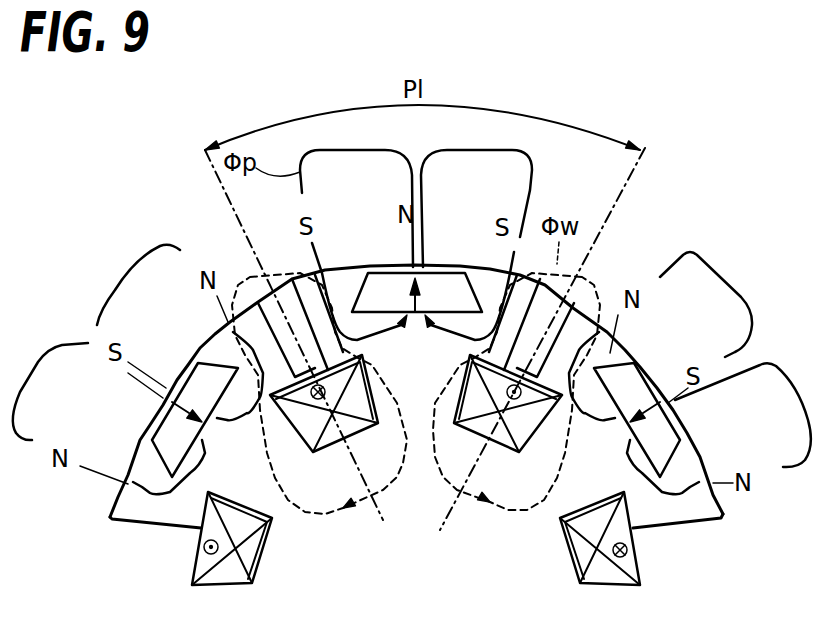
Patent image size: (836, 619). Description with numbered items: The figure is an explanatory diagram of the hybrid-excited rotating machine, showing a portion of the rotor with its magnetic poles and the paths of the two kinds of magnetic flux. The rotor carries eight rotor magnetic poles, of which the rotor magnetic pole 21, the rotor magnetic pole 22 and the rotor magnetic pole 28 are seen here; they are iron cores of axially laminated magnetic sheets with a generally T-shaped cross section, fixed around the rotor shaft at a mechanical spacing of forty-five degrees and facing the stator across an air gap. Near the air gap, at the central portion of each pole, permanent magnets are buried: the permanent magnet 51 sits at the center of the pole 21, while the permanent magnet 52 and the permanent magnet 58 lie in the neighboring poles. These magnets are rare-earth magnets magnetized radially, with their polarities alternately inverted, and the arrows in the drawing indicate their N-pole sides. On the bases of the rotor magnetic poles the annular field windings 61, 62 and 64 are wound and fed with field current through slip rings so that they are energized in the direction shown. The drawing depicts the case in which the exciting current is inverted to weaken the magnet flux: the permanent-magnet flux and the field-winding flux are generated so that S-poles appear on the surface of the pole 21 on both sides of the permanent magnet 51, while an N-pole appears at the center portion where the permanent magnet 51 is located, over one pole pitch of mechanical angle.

The rotor magnetic pole 21 is at (350, 262).
The rotor magnetic pole 22 is at (583, 348).
The rotor magnetic pole 28 is at (110, 510).
The permanent magnet 51 is at (450, 262).
The permanent magnet 52 is at (667, 442).
The permanent magnet 58 is at (165, 440).
The field winding 61 is at (328, 432).
The field winding 62 is at (562, 528).
The field winding 64 is at (252, 553).